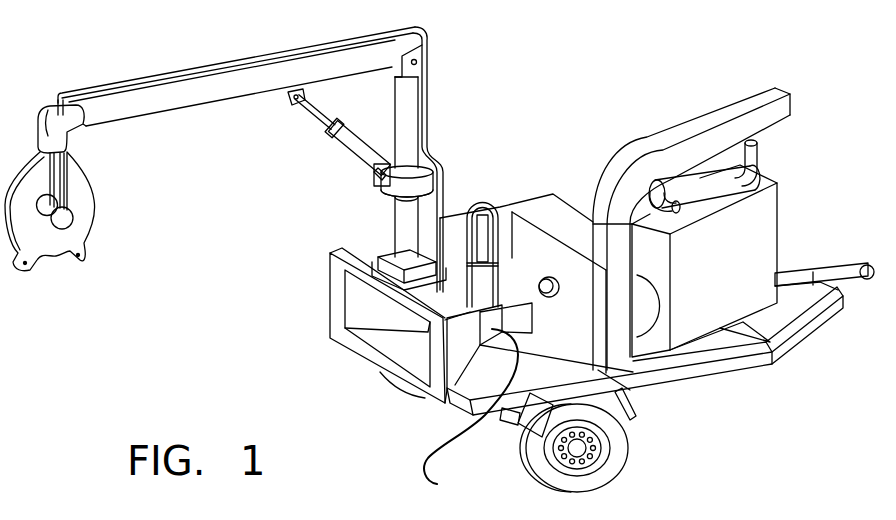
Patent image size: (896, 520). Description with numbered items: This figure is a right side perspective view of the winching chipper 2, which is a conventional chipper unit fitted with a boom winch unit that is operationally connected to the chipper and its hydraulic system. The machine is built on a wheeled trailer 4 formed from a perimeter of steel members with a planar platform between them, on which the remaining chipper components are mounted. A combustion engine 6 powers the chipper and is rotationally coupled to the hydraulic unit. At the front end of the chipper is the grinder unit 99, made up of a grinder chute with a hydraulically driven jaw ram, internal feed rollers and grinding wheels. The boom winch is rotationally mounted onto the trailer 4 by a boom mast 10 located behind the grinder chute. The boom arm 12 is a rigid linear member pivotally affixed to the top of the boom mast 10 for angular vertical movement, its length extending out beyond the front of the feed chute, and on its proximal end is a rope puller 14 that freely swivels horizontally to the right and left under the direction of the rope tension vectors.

The winching chipper 2 is at (606, 81).
The wheeled trailer 4 is at (732, 363).
The combustion engine 6 is at (765, 228).
The boom mast 10 is at (412, 104).
The boom arm 12 is at (177, 98).
The rope puller 14 is at (90, 213).
The grinder unit 99 is at (471, 421).